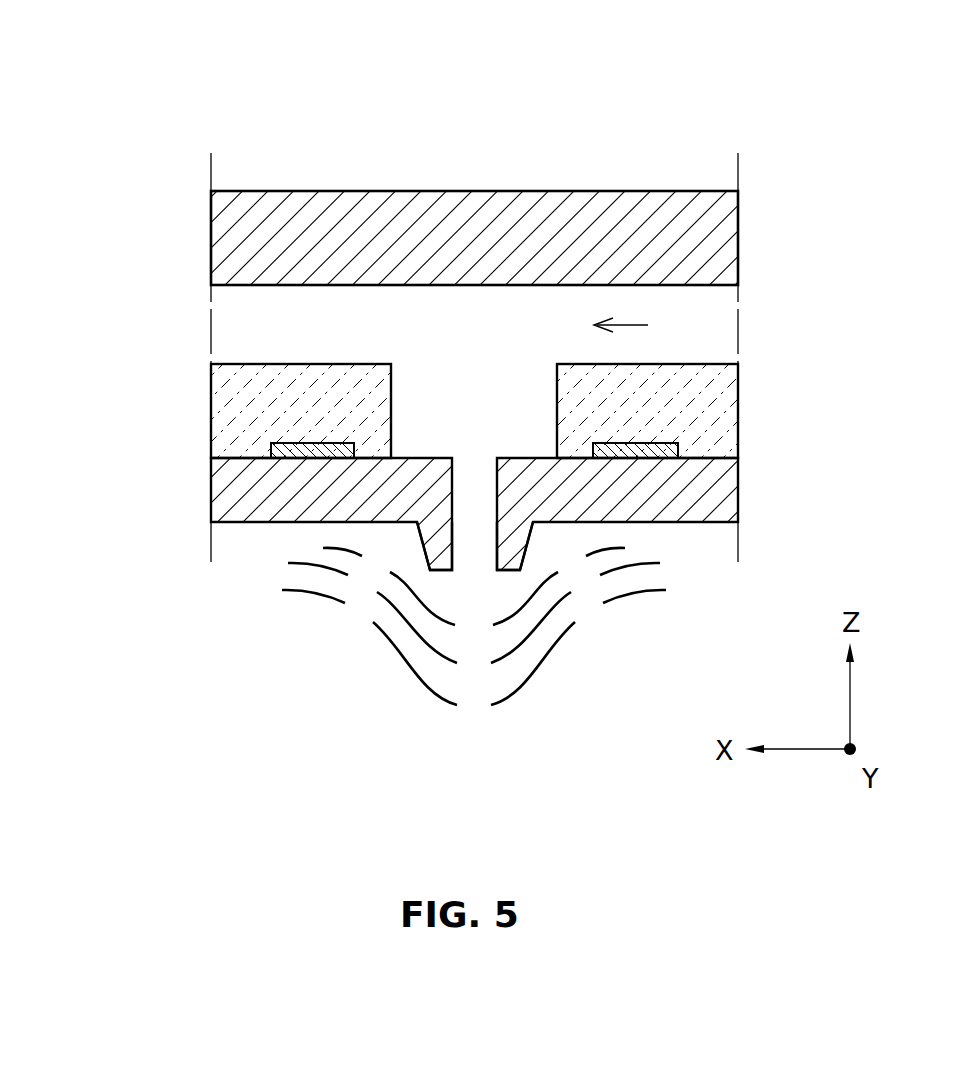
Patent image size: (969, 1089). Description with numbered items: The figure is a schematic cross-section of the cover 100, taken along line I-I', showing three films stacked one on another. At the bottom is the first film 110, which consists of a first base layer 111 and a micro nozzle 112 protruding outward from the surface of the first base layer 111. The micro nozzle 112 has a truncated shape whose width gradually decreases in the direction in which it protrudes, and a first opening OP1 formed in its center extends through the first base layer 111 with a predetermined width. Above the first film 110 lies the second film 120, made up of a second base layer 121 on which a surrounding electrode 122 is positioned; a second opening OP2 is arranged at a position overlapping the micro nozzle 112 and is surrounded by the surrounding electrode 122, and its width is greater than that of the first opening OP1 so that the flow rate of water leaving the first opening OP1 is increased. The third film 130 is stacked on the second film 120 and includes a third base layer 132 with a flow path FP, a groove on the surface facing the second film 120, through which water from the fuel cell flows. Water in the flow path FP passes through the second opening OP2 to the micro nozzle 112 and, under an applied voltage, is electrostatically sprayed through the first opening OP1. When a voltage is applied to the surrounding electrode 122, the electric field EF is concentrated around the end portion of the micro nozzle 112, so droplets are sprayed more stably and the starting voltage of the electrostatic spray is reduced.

The cover 100 is at (699, 130).
The first film 110 is at (178, 489).
The first base layer 111 is at (723, 495).
The micro nozzle 112 is at (438, 560).
The second film 120 is at (178, 412).
The second base layer 121 is at (723, 402).
The surrounding electrode 122 is at (722, 453).
The third film 130 is at (178, 238).
The third base layer 132 is at (728, 242).
The first opening OP1 is at (474, 562).
The second opening OP2 is at (473, 386).
The flow path FP is at (240, 328).
The electric field EF is at (563, 637).